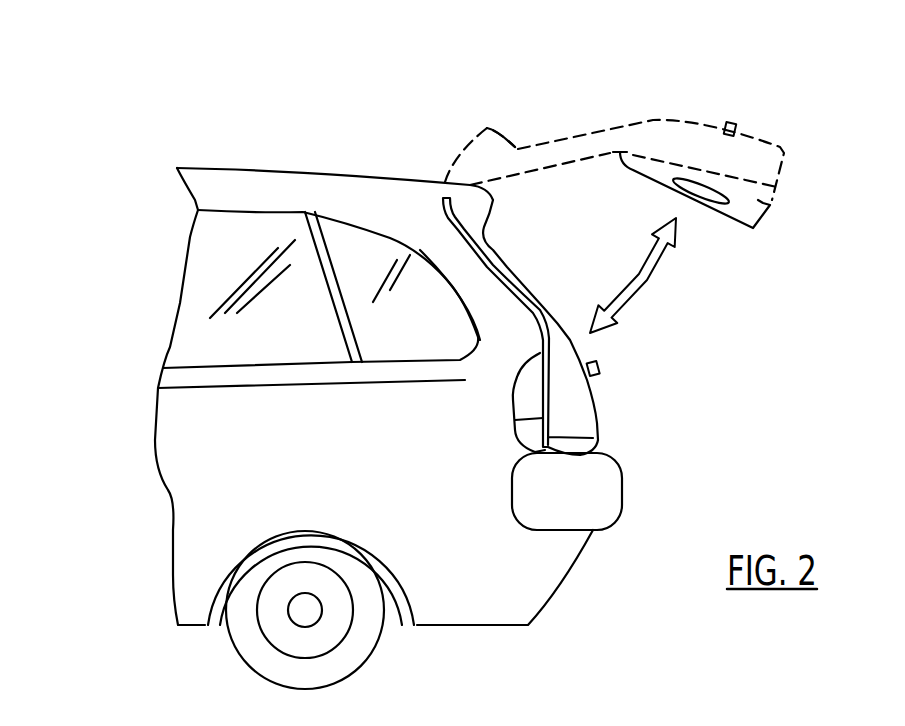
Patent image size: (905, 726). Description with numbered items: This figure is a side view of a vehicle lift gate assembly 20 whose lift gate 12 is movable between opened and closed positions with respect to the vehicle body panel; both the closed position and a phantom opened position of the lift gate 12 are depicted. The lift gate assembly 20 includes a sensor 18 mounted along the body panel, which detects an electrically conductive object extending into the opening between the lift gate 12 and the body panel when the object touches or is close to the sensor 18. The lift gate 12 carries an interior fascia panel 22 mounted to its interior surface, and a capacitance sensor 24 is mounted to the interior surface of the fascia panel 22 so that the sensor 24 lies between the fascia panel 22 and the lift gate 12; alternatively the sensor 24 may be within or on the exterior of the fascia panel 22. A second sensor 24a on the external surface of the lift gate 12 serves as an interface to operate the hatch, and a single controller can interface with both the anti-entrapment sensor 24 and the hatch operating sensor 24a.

The lift gate 12 is at (762, 147).
The sensor 18 is at (593, 438).
The vehicle lift gate assembly 20 is at (787, 252).
The interior fascia panel 22 is at (647, 180).
The capacitance sensor 24 is at (747, 192).
The second sensor 24a is at (731, 122).